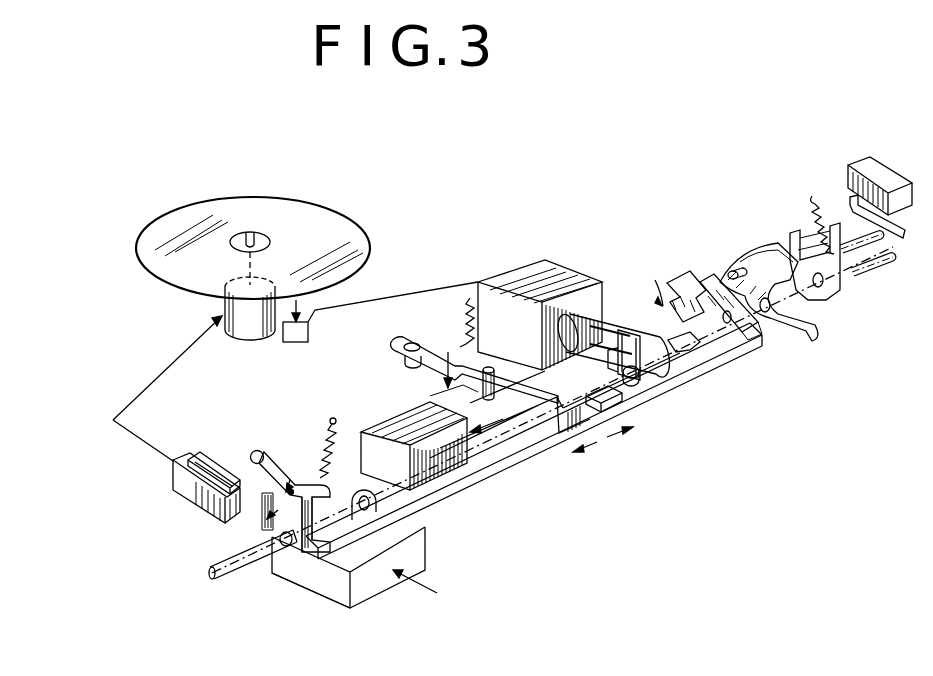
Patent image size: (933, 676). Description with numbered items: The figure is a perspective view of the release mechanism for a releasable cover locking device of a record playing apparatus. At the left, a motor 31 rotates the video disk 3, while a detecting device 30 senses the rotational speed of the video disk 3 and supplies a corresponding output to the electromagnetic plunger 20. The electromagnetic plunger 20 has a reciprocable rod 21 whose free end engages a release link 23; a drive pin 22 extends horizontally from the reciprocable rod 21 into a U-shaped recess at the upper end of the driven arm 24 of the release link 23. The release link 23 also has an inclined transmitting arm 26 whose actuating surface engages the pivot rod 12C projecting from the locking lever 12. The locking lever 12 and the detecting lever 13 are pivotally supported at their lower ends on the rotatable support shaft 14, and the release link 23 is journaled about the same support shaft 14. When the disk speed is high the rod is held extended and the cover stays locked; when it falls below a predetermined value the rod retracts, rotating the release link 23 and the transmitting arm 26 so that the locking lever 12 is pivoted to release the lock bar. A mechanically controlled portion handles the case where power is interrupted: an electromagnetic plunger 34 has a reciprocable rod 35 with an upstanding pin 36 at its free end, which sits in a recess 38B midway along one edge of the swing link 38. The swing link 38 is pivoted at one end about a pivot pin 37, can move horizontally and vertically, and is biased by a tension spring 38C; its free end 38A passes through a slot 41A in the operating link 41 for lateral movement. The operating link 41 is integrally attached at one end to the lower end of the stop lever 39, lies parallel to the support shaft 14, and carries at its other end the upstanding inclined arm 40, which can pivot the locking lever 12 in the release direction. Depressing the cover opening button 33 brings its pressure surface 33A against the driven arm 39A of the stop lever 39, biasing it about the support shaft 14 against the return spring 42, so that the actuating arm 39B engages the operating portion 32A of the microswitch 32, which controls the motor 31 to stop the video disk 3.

The video disk 3 is at (252, 198).
The motor 31 is at (247, 333).
The detecting device 30 is at (298, 342).
The electromagnetic plunger 20 is at (511, 326).
The reciprocable rod 21 is at (575, 320).
The drive pin 22 is at (625, 345).
The release link 23 is at (703, 345).
The driven arm 24 is at (653, 368).
The inclined arm 40 is at (670, 283).
The transmitting arm 26 is at (705, 277).
The locking lever 12 is at (757, 243).
The pivot rod 12C is at (730, 273).
The detecting lever 13 is at (837, 293).
The pivot pin 37 is at (397, 347).
The tension spring 38C is at (470, 298).
The swing link 38 is at (493, 370).
The reciprocable rod 35 is at (473, 407).
The electromagnetic plunger 34 is at (393, 465).
The upstanding pin 36 is at (502, 395).
The recess 38B is at (535, 398).
The free end 38A is at (618, 400).
The slot 41A is at (584, 410).
The operating link 41 is at (470, 494).
The stop lever 39 is at (288, 507).
The actuating arm 39B is at (262, 443).
The driven arm 39A is at (329, 488).
The return spring 42 is at (332, 420).
The microswitch 32 is at (183, 490).
The operating portion 32A is at (213, 454).
The support shaft 14 is at (237, 577).
The cover opening button 33 is at (385, 582).
The pressure surface 33A is at (270, 578).